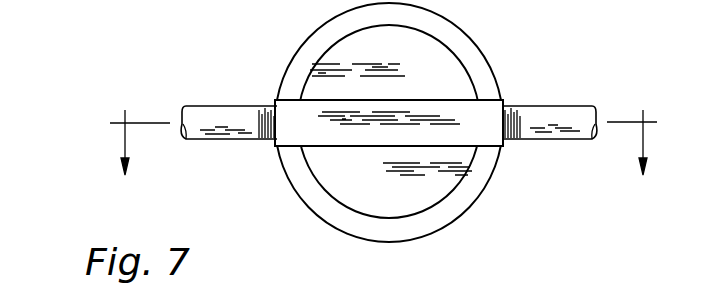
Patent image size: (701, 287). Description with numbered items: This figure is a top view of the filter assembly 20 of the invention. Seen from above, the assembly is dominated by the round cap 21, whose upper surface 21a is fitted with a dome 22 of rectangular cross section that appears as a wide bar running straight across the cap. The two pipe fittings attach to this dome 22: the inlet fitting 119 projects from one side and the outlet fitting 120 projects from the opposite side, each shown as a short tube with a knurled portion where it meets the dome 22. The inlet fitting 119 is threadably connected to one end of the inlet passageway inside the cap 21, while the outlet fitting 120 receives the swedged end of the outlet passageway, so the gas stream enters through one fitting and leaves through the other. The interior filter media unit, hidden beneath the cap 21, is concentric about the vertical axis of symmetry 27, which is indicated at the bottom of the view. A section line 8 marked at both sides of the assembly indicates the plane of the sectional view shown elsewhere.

The filter assembly 20 is at (196, 60).
The cap 21 is at (399, 125).
The upper surface 21a is at (350, 193).
The dome 22 is at (317, 148).
The inlet fitting 119 is at (198, 107).
The outlet fitting 120 is at (538, 106).
The section line 8- 8 is at (383, 155).
The vertical axis of symmetry 27 is at (435, 282).